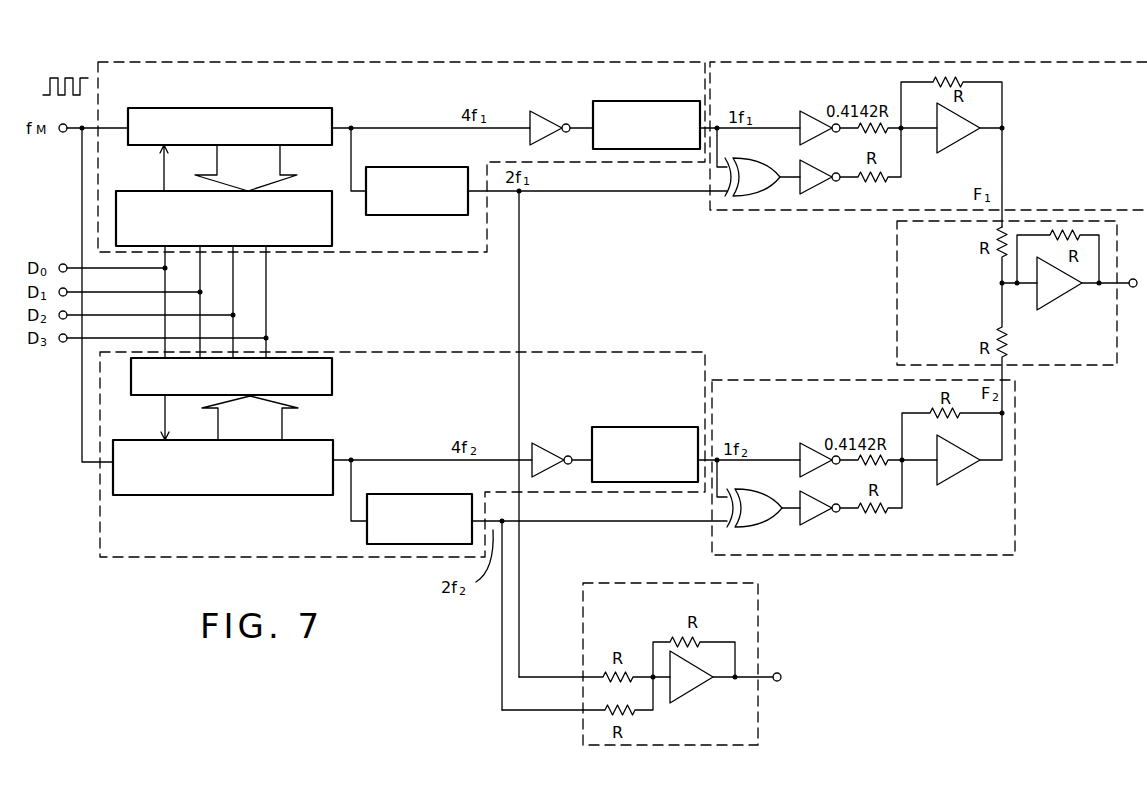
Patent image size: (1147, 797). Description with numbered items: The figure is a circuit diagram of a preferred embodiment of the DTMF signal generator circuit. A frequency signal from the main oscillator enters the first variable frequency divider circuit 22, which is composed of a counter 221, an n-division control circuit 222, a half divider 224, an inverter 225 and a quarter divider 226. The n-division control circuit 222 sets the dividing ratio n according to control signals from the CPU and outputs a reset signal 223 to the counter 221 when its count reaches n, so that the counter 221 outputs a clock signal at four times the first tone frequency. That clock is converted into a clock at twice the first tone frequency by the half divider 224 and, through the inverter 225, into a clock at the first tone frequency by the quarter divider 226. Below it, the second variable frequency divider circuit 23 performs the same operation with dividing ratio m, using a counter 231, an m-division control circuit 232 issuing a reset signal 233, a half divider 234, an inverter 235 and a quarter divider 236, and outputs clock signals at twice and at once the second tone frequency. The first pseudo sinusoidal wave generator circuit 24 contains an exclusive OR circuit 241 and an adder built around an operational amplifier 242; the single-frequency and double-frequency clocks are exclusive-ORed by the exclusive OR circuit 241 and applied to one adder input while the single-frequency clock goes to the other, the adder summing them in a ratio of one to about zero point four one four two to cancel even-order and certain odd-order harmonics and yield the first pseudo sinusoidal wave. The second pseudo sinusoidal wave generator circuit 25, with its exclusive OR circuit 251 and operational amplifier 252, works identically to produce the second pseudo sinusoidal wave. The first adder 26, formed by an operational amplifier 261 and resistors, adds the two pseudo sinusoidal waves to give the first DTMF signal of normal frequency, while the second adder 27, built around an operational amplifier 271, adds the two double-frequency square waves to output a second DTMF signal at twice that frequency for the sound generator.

The first variable frequency divider circuit 22 is at (227, 62).
The 1/n counter 221 is at (313, 145).
The n-division control circuit 222 is at (332, 212).
The reset signal 223 is at (160, 165).
The 1/2 divider 224 is at (415, 167).
The inverter 225 is at (556, 120).
The 1/4 divider 226 is at (657, 112).
The second variable frequency divider circuit 23 is at (158, 558).
The 1/m counter 231 is at (332, 378).
The m-division control circuit 232 is at (325, 452).
The reset signal 233 is at (162, 420).
The 1/2 divider 234 is at (415, 494).
The inverter 235 is at (553, 450).
The 1/4 divider 236 is at (673, 427).
The first pseudo sinusoidal wave generator circuit 24 is at (1104, 68).
The exclusive OR circuit 241 is at (755, 192).
The operational amplifier 242 is at (945, 152).
The second pseudo sinusoidal wave generator circuit 25 is at (760, 378).
The exclusive OR circuit 251 is at (755, 525).
The operational amplifier 252 is at (950, 483).
The first adder 26 is at (897, 286).
The operational amplifier 261 is at (1058, 292).
The second adder 27 is at (758, 645).
The operational amplifier 271 is at (698, 686).